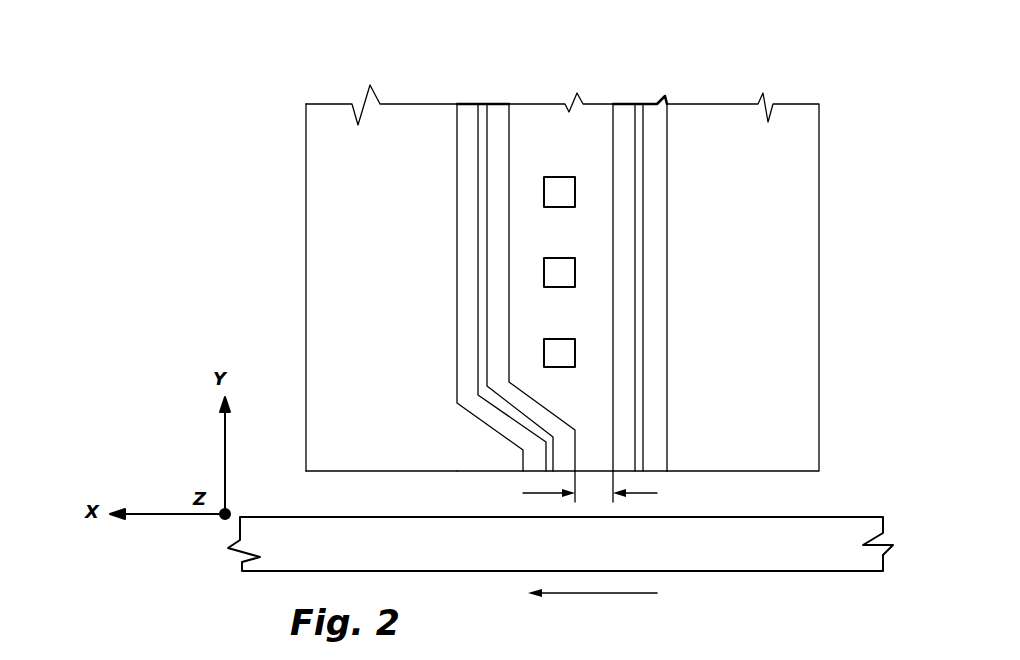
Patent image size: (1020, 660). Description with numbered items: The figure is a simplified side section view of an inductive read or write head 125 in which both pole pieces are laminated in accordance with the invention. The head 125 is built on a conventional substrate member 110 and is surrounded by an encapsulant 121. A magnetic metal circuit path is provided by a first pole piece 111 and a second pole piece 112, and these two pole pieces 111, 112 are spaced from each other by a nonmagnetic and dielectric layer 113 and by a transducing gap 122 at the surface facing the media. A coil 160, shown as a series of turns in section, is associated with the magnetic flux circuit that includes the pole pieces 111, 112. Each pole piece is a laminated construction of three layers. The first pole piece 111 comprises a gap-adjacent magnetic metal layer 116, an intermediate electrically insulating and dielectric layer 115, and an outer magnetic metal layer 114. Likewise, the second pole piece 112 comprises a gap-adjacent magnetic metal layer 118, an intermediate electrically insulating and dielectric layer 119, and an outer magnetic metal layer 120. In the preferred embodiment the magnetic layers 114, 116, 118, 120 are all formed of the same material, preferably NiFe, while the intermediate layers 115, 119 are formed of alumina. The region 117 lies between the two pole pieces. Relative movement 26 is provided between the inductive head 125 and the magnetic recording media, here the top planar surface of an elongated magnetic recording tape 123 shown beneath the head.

The relative movement 26 is at (641, 595).
The substrate member 110 is at (810, 237).
The first pole piece 111 is at (664, 93).
The second pole piece 112 is at (505, 95).
The nonmagnetic and dielectric layer 113 is at (607, 93).
The outer magnetic metal layer 114 is at (658, 162).
The intermediate electrically insulating and dielectric layer 115 is at (640, 208).
The gap-adjacent magnetic metal layer 116 is at (627, 351).
The gap/insulating region 117 is at (593, 272).
The gap-adjacent magnetic metal layer 118 is at (493, 143).
The intermediate electrically insulating and dielectric layer 119 is at (482, 238).
The outer magnetic metal layer 120 is at (467, 321).
The encapsulant 121 is at (327, 263).
The transducing gap 122 is at (653, 495).
The magnetic recording tape 123 is at (830, 525).
The inductive head 125 is at (843, 114).
The coil 160 is at (556, 192).